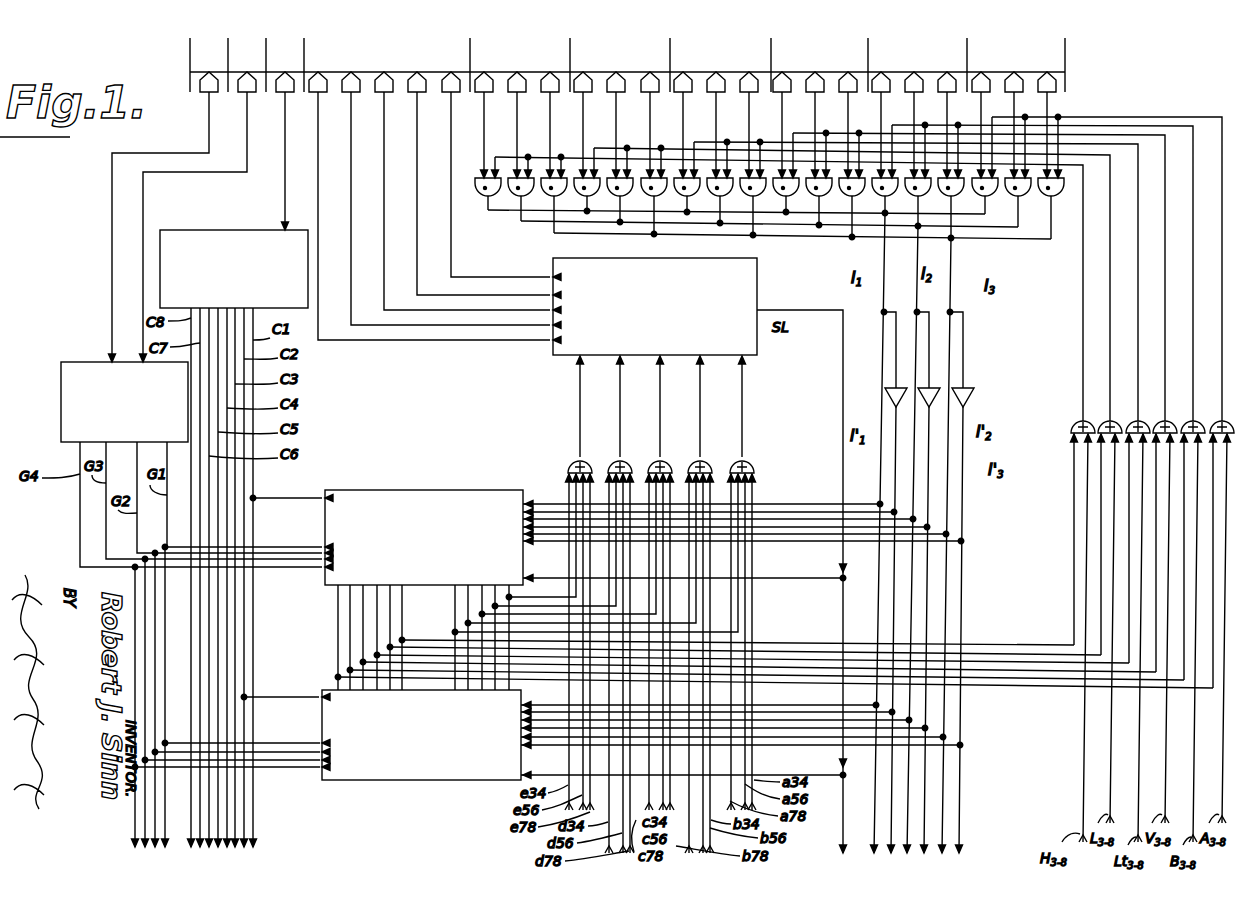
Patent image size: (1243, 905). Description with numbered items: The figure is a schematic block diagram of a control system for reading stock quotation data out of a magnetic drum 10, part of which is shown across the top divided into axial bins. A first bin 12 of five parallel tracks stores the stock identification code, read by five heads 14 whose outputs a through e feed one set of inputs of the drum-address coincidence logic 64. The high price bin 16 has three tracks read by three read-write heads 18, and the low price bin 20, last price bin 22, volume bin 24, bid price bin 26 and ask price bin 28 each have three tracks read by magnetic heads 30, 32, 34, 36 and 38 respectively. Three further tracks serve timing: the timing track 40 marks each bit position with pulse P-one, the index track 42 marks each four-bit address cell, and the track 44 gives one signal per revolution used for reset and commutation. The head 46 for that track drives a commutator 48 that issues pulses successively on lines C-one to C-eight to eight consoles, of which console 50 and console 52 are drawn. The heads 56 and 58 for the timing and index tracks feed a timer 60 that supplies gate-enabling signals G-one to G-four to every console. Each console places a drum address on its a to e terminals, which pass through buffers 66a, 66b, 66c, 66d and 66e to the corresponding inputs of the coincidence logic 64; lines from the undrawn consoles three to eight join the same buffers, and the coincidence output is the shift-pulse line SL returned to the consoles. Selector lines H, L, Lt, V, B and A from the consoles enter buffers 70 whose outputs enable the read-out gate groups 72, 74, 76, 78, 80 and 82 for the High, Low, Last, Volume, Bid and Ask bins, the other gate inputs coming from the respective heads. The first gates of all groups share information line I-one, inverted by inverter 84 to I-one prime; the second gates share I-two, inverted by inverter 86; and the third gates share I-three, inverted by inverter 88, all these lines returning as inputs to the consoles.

The magnetic drum 10 is at (1067, 62).
The first bin 12 is at (370, 47).
The magnetic recording and reading heads 14 is at (278, 98).
The high price bin 16 is at (512, 47).
The read-write heads 18 is at (485, 94).
The low price bin 20 is at (613, 47).
The last price bin 22 is at (707, 47).
The volume of sales bin 24 is at (810, 47).
The bid price bin 26 is at (908, 47).
The ask price bin 28 is at (1008, 47).
The magnetic heads 30 is at (584, 94).
The magnetic heads 32 is at (650, 94).
The magnetic heads 34 is at (785, 94).
The magnetic heads 36 is at (911, 98).
The magnetic heads 38 is at (1057, 97).
The timing track 40 is at (199, 47).
The index track 42 is at (237, 47).
The reset track 44 is at (275, 47).
The head 46 is at (250, 97).
The commutator 48 is at (252, 214).
The console 50 is at (434, 490).
The console 52 is at (385, 784).
The head 56 is at (197, 95).
The head 58 is at (238, 96).
The timer 60 is at (72, 362).
The coincidence logic 64 is at (758, 286).
The buffer 66a is at (753, 468).
The buffer 66b is at (705, 458).
The buffer 66c is at (662, 458).
The buffer 66d is at (612, 458).
The buffer 66e is at (568, 466).
The buffers 70 is at (1073, 424).
The read-out gates 72 is at (494, 206).
The read-out gates 74 is at (580, 200).
The read-out gates 76 is at (680, 200).
The read-out gates 78 is at (800, 200).
The read-out gates 80 is at (950, 200).
The read-out gates 82 is at (1030, 200).
The inverter 84 is at (888, 392).
The inverter 86 is at (938, 387).
The inverter 88 is at (956, 388).